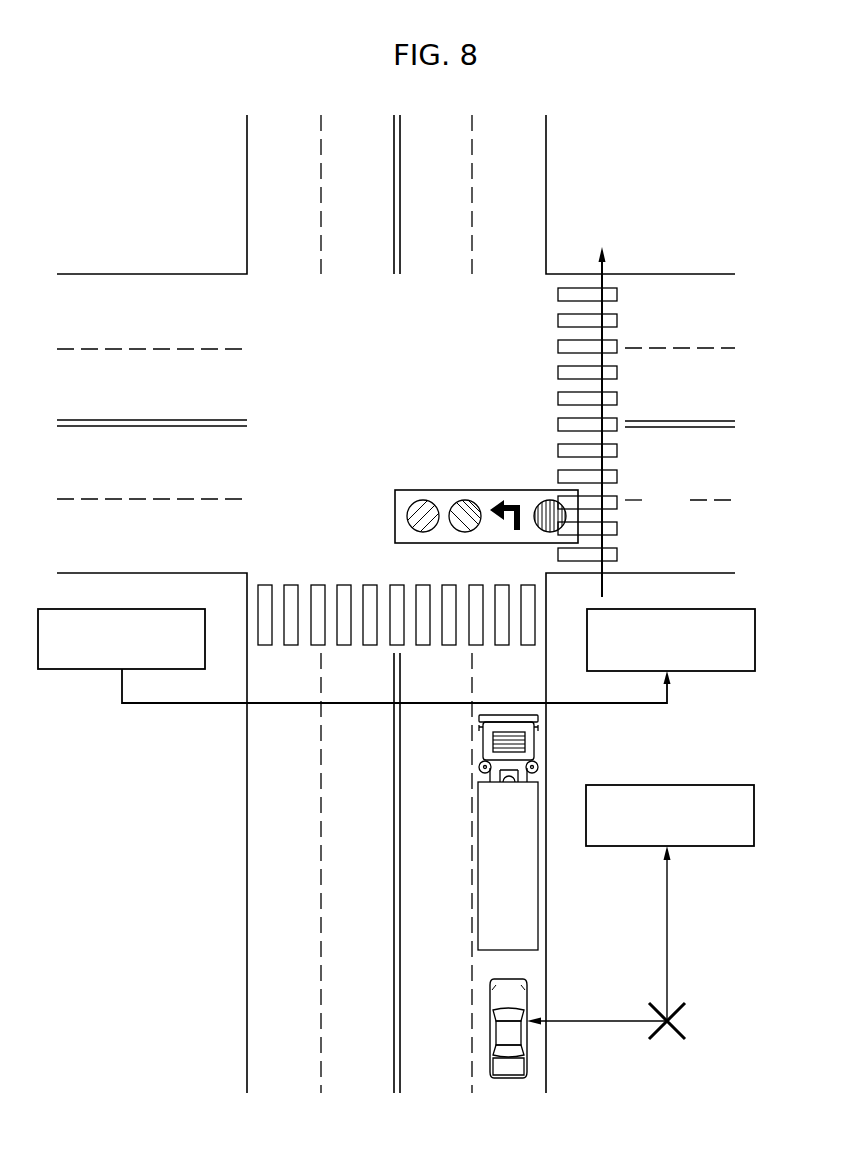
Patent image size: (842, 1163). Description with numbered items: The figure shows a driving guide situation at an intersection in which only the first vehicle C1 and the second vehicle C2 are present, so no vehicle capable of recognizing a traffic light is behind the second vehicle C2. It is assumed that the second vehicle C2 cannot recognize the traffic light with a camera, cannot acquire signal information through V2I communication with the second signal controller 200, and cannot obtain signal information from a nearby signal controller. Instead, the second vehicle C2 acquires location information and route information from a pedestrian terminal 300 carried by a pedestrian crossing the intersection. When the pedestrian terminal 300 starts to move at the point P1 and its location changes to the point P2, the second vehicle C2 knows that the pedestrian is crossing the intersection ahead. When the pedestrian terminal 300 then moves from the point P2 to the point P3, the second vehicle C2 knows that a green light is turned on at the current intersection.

The pedestrian terminal 300 is at (75, 669).
The second signal controller 200 is at (715, 846).
The first vehicle C1 is at (538, 894).
The second vehicle C2 is at (528, 1028).
The point P1 is at (37, 697).
The point P2 is at (783, 645).
The point P3 is at (668, 502).